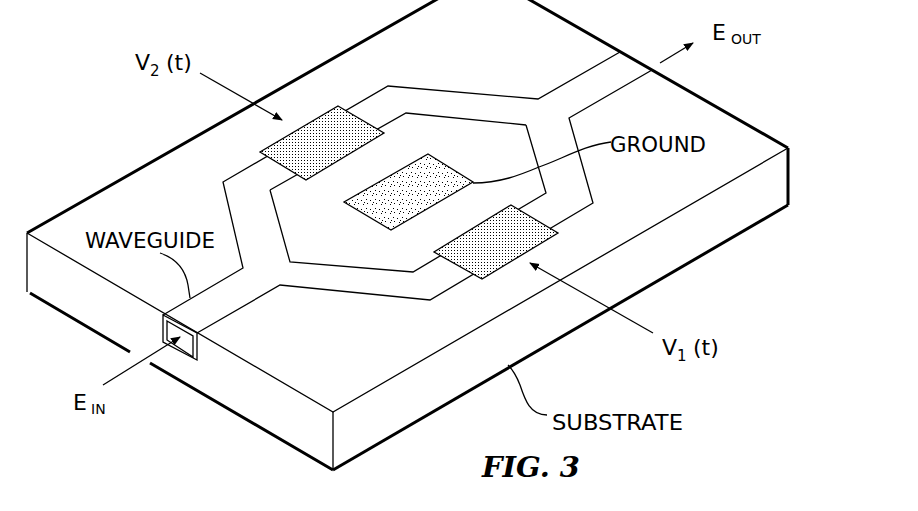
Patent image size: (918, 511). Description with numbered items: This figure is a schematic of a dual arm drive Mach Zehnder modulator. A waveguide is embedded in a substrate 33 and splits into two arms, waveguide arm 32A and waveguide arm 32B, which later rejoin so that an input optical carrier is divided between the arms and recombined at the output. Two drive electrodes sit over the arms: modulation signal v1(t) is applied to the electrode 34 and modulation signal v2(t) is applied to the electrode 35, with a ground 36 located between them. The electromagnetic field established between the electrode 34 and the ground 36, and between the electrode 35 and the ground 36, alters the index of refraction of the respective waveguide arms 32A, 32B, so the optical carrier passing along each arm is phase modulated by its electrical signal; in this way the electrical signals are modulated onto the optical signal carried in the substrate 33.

The waveguide arm 32A is at (352, 293).
The waveguide arm 32B is at (223, 201).
The substrate 33 is at (250, 425).
The electrode 34 is at (541, 244).
The electrode 35 is at (319, 115).
The ground 36 is at (441, 163).